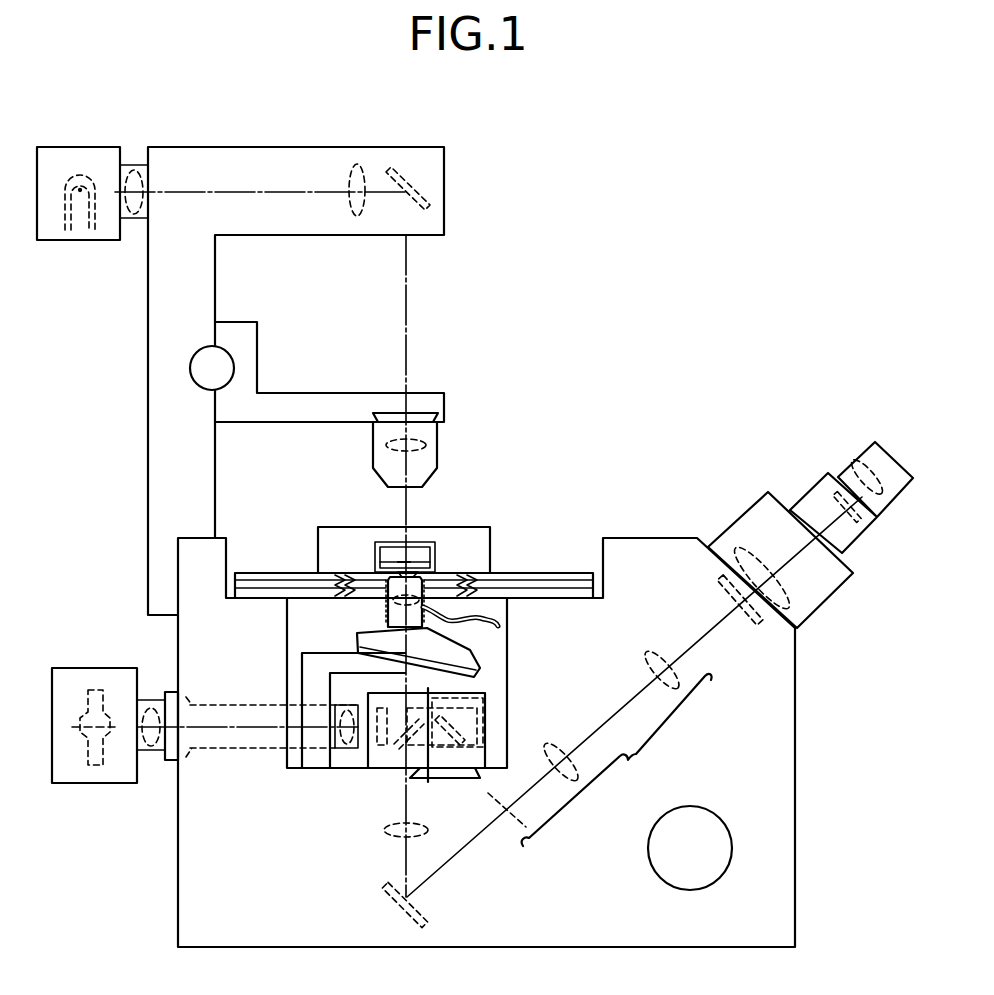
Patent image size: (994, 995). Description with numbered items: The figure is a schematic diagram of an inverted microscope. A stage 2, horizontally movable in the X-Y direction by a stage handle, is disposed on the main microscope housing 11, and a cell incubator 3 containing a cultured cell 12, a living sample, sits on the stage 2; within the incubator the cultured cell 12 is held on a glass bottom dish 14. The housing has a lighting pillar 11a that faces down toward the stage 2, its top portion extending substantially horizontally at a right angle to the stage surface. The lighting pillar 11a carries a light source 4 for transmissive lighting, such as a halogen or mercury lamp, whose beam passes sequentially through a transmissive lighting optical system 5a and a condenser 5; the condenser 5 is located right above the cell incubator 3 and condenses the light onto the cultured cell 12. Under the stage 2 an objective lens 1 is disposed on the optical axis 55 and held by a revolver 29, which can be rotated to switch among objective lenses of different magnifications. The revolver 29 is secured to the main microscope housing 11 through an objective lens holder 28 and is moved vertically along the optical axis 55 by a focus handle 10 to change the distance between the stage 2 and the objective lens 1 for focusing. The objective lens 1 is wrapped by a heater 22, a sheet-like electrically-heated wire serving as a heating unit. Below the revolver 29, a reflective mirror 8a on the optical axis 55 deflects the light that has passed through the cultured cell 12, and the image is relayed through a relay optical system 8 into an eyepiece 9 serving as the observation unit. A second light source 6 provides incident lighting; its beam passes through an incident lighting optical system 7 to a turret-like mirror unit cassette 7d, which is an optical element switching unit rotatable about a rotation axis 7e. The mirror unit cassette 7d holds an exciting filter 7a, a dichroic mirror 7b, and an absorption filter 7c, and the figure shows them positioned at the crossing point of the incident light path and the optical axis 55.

The objective lens 1 is at (389, 620).
The stage 2 is at (274, 585).
The cell incubator 3 is at (492, 548).
The light source 4 is at (101, 153).
The condenser 5 is at (437, 443).
The transmissive lighting optical system 5a is at (150, 205).
The light source 6 is at (108, 785).
The incident lighting optical system 7 is at (150, 699).
The exciting filter 7a is at (375, 753).
The dichroic mirror 7b is at (482, 698).
The absorption filter 7c is at (414, 760).
The mirror unit cassette 7d is at (381, 750).
The rotation axis 7e is at (487, 715).
The relay optical system 8 is at (634, 697).
The reflective mirror 8a is at (393, 903).
The eyepiece 9 is at (888, 455).
The focus handle 10 is at (648, 868).
The main microscope housing 11 is at (787, 909).
The lighting pillar 11a is at (158, 347).
The cultured cell 12 is at (402, 562).
The glass bottom dish 14 is at (428, 543).
The heater 22 is at (385, 582).
The objective lens holder 28 is at (302, 660).
The revolver 29 is at (455, 651).
The optical axis 55 is at (405, 857).